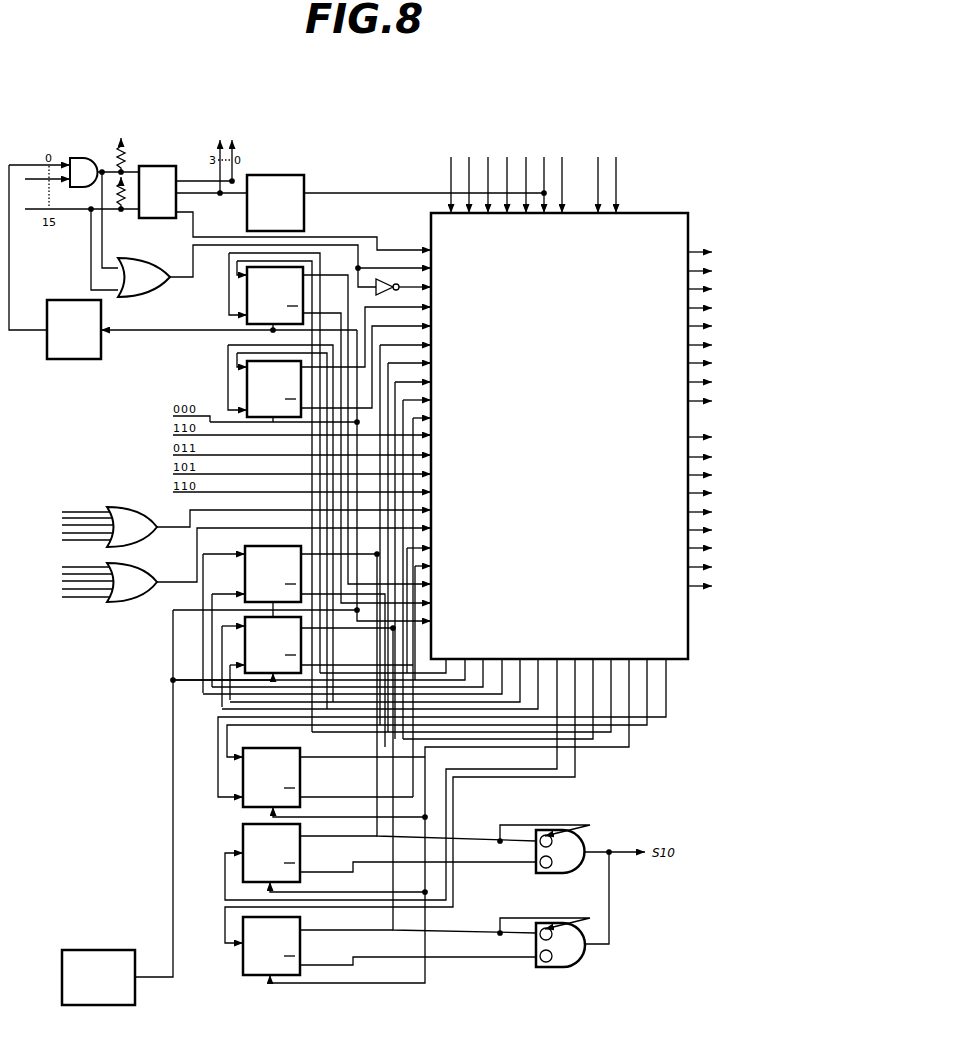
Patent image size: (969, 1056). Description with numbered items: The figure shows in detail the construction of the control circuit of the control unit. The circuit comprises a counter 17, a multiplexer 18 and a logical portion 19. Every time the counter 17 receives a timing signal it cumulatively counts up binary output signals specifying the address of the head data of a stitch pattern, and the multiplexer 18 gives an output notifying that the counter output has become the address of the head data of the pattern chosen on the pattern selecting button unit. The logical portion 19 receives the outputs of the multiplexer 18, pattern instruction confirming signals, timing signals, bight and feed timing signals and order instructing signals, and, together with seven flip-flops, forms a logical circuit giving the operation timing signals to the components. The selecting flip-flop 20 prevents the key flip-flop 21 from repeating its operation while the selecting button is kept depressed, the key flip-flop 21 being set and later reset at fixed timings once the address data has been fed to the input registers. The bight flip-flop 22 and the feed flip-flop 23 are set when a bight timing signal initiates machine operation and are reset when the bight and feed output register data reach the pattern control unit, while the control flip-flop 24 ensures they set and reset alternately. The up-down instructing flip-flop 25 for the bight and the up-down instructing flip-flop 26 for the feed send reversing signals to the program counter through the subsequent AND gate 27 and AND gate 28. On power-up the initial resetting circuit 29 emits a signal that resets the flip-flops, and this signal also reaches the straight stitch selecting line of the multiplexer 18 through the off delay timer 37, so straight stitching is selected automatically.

The counter 17 is at (298, 175).
The multiplexer 18 is at (149, 168).
The logical portion 19 is at (566, 437).
The selecting flip-flop 20 is at (247, 294).
The key flip-flop 21 is at (247, 381).
The bight flip-flop 22 is at (245, 582).
The feed flip-flop 23 is at (245, 647).
The control flip-flop 24 is at (300, 780).
The up-down instructing flip-flop for the bight 25 is at (300, 851).
The up-down instructing flip-flop for the feed 26 is at (300, 942).
The AND gate 27 is at (552, 873).
The AND gate 28 is at (558, 967).
The initial resetting circuit 29 is at (94, 950).
The off delay timer 37 is at (72, 359).